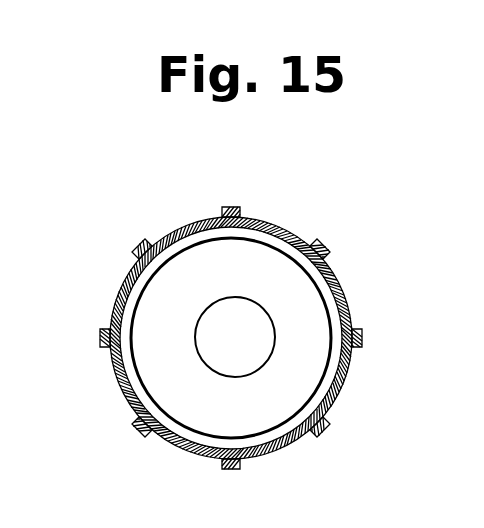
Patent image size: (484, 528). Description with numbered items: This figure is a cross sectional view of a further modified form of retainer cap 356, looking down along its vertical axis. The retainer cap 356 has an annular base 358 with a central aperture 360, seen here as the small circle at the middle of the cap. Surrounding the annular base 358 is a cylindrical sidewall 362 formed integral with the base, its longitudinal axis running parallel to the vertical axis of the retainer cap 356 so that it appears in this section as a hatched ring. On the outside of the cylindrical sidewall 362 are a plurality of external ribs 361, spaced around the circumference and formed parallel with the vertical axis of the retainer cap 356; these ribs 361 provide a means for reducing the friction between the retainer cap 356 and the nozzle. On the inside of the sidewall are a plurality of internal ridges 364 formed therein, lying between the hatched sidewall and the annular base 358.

The retainer cap 356 is at (281, 192).
The annular base 358 is at (163, 362).
The aperture 360 is at (197, 358).
The external ribs 361 is at (138, 244).
The cylindrical sidewall 362 is at (272, 450).
The internal ridges 364 is at (222, 224).